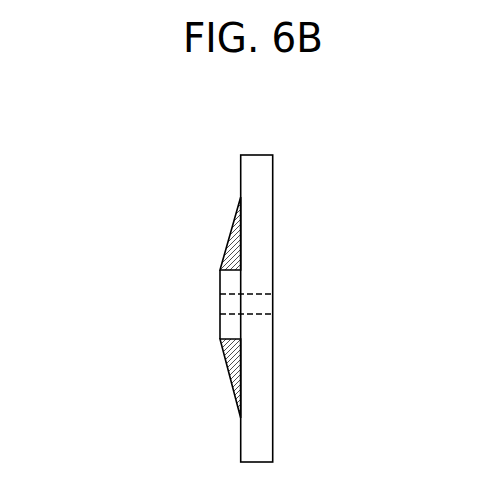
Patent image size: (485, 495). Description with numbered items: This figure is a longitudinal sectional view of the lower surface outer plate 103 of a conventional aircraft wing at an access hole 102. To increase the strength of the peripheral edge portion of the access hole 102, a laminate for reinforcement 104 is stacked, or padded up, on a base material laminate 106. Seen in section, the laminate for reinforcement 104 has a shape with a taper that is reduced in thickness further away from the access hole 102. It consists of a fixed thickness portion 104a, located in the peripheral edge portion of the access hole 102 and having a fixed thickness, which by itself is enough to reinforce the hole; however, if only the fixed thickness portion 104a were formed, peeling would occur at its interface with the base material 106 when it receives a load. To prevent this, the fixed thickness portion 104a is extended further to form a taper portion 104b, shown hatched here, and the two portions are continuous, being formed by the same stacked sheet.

The second partition member 103 is at (204, 176).
The base material laminate 106 is at (258, 213).
The access hole 102 is at (230, 303).
The laminate for reinforcement 104 is at (117, 307).
The fixed thickness portion 104a is at (230, 325).
The taper portion 104b is at (230, 375).